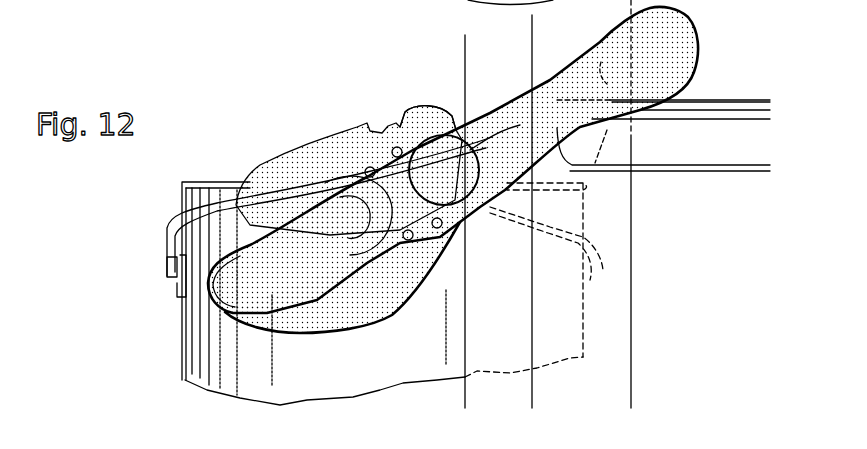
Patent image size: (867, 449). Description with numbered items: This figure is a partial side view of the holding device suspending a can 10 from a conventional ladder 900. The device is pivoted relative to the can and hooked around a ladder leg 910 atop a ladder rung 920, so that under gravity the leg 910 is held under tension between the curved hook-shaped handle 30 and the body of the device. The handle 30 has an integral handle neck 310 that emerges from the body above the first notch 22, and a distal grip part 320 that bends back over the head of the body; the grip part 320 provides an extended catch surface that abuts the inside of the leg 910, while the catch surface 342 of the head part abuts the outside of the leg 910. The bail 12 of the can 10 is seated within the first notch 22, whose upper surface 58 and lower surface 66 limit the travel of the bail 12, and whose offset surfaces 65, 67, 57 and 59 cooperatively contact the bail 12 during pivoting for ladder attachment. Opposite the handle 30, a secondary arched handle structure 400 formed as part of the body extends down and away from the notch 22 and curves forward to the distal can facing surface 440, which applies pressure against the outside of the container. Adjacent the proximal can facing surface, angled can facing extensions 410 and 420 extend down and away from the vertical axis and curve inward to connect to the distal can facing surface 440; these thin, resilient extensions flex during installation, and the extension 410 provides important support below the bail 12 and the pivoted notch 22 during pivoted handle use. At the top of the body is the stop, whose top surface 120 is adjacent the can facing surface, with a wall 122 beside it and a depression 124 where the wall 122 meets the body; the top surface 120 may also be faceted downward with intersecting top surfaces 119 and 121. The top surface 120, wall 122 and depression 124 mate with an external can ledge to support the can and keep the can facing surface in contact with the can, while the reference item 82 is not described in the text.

The can 10 is at (186, 368).
The bail 12 is at (182, 232).
The first notch 22 is at (402, 225).
The handle 30 is at (688, 19).
The offset surface 57 is at (375, 152).
The upper surface 58 is at (480, 206).
The offset surface 59 is at (449, 212).
The offset surface 65 is at (352, 200).
The lower surface 66 is at (312, 182).
The offset surface 67 is at (438, 242).
The stop 82 is at (441, 236).
The intersecting top surface 119 is at (456, 120).
The top surface 120 is at (526, 126).
The intersecting top surface 121 is at (486, 147).
The wall 122 is at (546, 118).
The depression 124 is at (393, 135).
The handle neck 310 is at (447, 125).
The grip part 320 is at (670, 70).
The catch surface 342 is at (536, 122).
The arched handle structure 400 is at (311, 263).
The angled can facing extension 410 is at (380, 305).
The angled can facing extension 420 is at (280, 173).
The distal can facing surface 440 is at (247, 313).
The ladder 900 is at (630, 270).
The ladder leg 910 is at (612, 303).
The ladder rung 920 is at (692, 112).